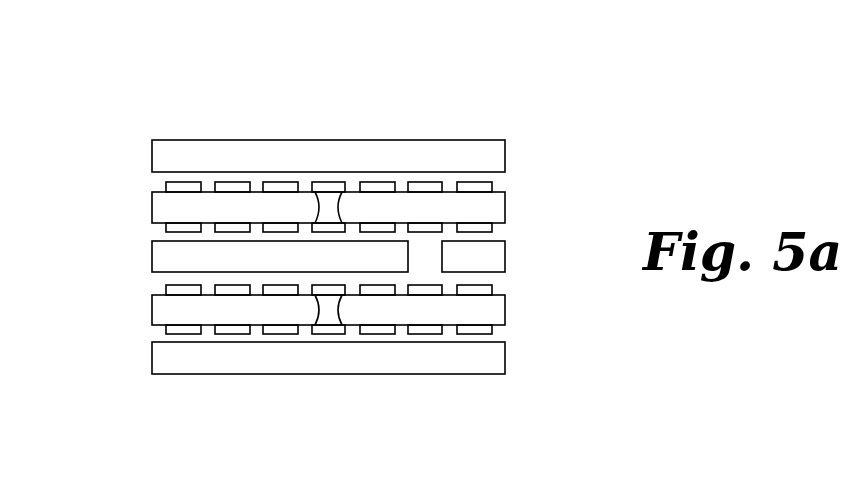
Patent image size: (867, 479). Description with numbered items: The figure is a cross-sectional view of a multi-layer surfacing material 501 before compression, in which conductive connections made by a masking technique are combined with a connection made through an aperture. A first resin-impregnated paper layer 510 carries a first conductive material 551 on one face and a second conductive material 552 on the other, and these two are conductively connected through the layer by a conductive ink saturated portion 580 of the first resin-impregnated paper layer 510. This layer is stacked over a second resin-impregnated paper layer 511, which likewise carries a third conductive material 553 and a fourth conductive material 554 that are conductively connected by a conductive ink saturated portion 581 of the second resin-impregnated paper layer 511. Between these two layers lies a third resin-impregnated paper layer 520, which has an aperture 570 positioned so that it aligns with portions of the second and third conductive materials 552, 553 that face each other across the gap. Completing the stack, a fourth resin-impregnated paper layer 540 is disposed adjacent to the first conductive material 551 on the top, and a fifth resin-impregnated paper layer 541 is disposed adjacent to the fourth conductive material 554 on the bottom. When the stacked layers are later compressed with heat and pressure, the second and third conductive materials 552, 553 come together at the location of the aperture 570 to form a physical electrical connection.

The stacked package assembly 501 is at (155, 114).
The first resin-impregnated paper layer 510 is at (497, 202).
The second resin-impregnated paper layer 511 is at (497, 355).
The third resin-impregnated paper layer 520 is at (158, 253).
The fourth resin-impregnated paper layer 540 is at (158, 160).
The fifth resin-impregnated paper layer 541 is at (162, 352).
The first conductive material 551 is at (378, 182).
The second conductive material 552 is at (378, 232).
The third conductive material 553 is at (278, 286).
The fourth conductive material 554 is at (280, 334).
The aperture 570 is at (425, 263).
The conductive ink saturated portion 580 is at (332, 202).
The conductive ink saturated portion 581 is at (333, 310).